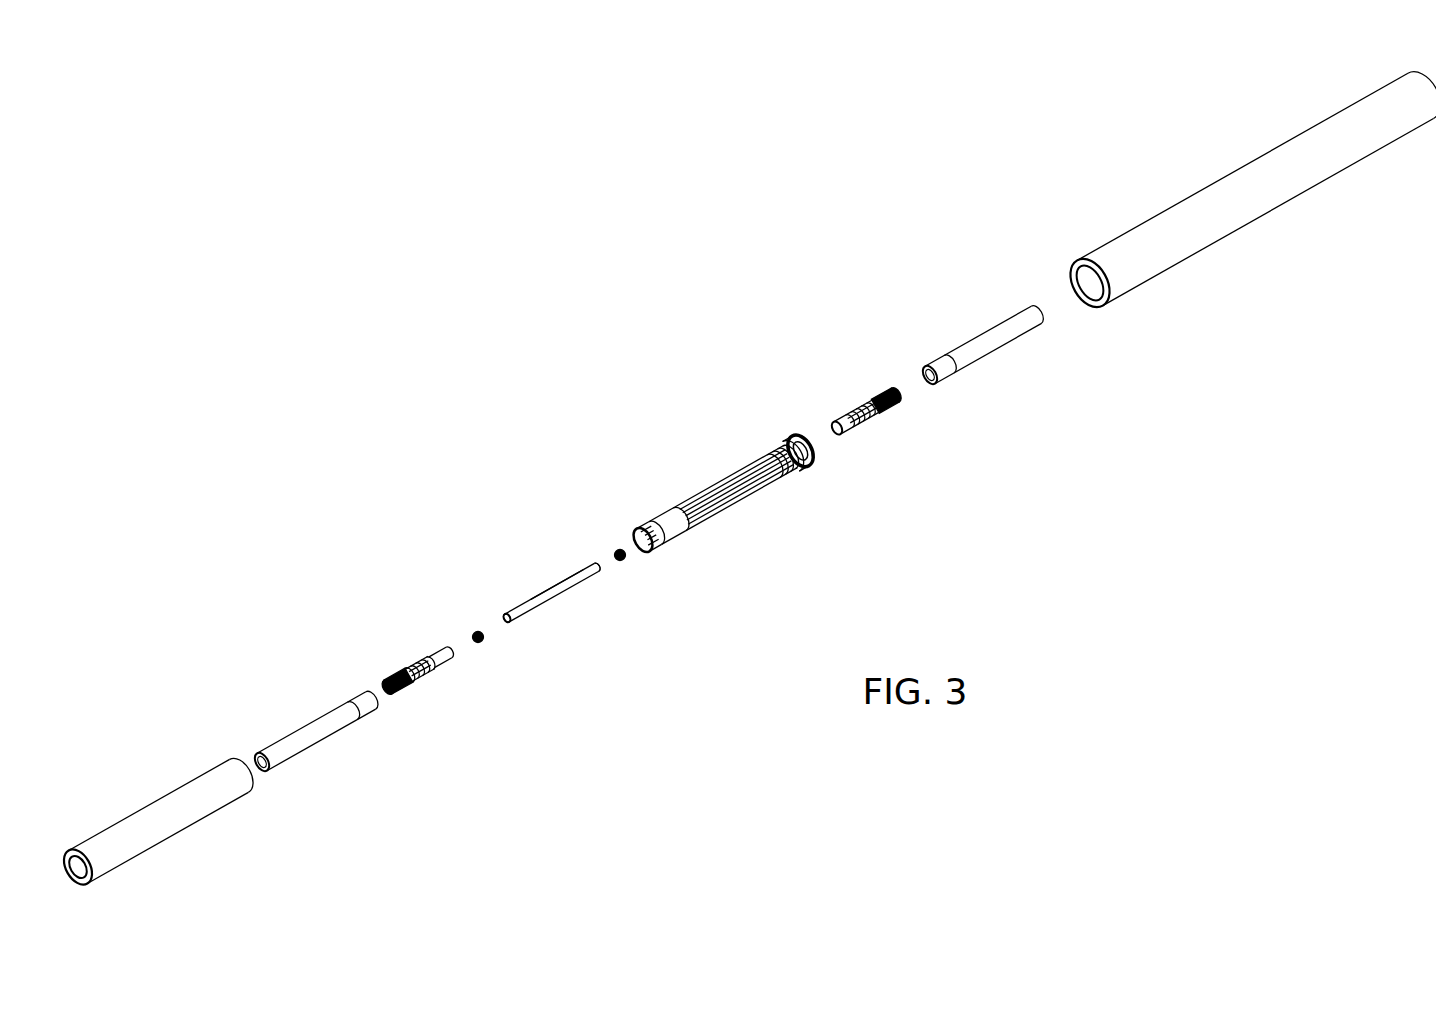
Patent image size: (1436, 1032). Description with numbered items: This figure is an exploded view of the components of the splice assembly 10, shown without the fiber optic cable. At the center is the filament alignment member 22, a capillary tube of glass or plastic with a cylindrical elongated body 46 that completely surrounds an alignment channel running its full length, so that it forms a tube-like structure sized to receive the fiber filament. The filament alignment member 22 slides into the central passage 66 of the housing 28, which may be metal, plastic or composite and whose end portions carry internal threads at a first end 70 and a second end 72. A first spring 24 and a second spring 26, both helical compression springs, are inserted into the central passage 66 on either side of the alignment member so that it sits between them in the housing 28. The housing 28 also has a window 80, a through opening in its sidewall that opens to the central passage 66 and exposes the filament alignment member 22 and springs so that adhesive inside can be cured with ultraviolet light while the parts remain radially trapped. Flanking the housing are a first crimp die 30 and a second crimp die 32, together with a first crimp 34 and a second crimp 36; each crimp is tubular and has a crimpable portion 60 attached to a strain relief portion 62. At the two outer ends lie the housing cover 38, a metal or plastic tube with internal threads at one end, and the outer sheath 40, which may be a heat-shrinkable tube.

The splice assembly 10 is at (656, 350).
The filament alignment member 22 is at (543, 566).
The first spring 24 is at (476, 632).
The second spring 26 is at (617, 546).
The housing 28 is at (662, 530).
The first crimp die 30 is at (440, 652).
The second crimp die 32 is at (848, 421).
The first crimp 34 is at (335, 717).
The second crimp 36 is at (982, 341).
The housing cover 38 is at (203, 793).
The outer sheath 40 is at (1170, 222).
The elongated body 46 is at (578, 582).
The crimpable portion 60 is at (363, 705).
The strain relief portion 62 is at (295, 743).
The central passage 66 is at (722, 500).
The first end 70 is at (643, 550).
The second end 72 is at (817, 455).
The window 80 is at (762, 457).